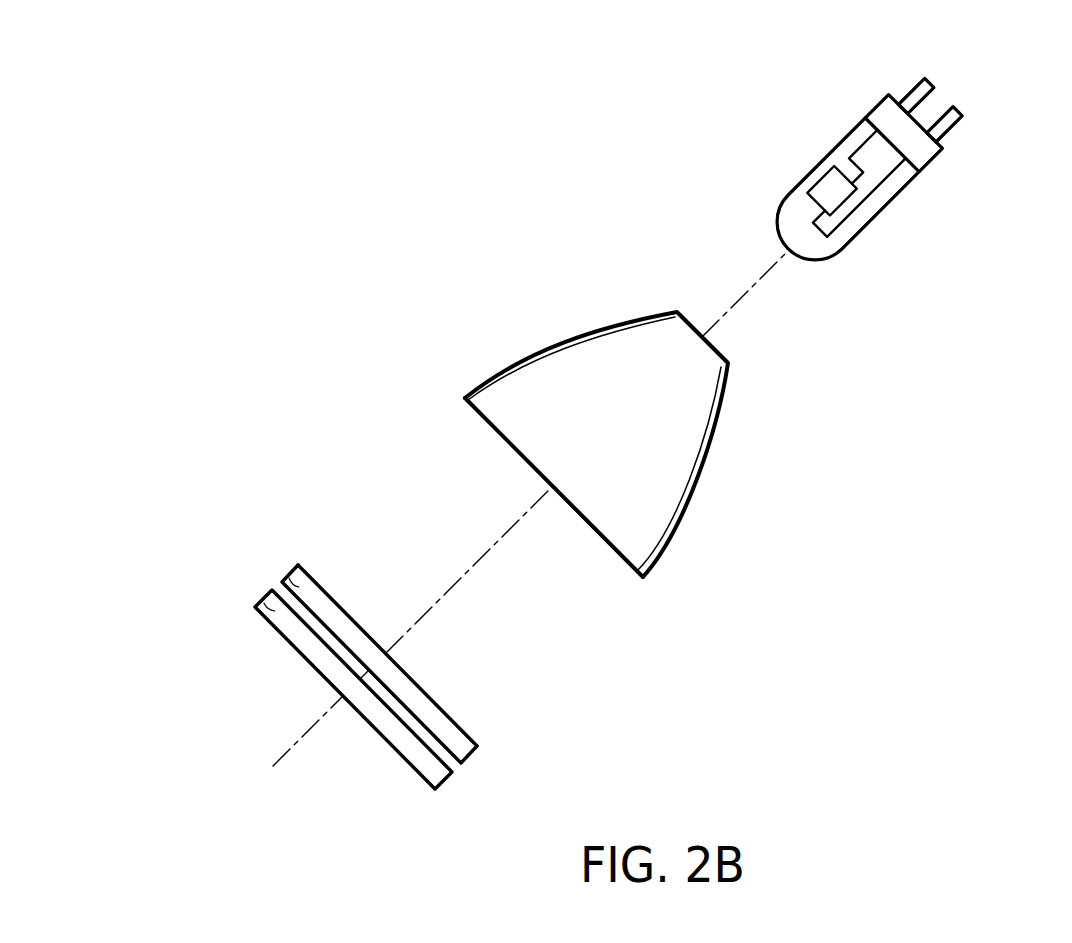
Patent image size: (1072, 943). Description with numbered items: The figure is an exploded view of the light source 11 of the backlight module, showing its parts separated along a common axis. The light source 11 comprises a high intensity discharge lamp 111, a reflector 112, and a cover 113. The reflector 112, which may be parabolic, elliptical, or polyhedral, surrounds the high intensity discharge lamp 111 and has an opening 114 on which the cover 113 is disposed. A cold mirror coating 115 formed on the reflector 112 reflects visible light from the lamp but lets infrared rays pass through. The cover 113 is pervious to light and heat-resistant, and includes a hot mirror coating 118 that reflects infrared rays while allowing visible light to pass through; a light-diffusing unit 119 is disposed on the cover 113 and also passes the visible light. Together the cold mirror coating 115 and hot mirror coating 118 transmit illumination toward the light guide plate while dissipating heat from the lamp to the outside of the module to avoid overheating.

The light source 11 is at (378, 191).
The high intensity discharge lamp 111 is at (1004, 155).
The reflector 112 is at (685, 485).
The cover 113 is at (397, 641).
The opening 114 is at (602, 537).
The cold mirror coating 115 is at (756, 468).
The hot mirror coating 118 is at (453, 717).
The light-diffusing unit 119 is at (264, 600).